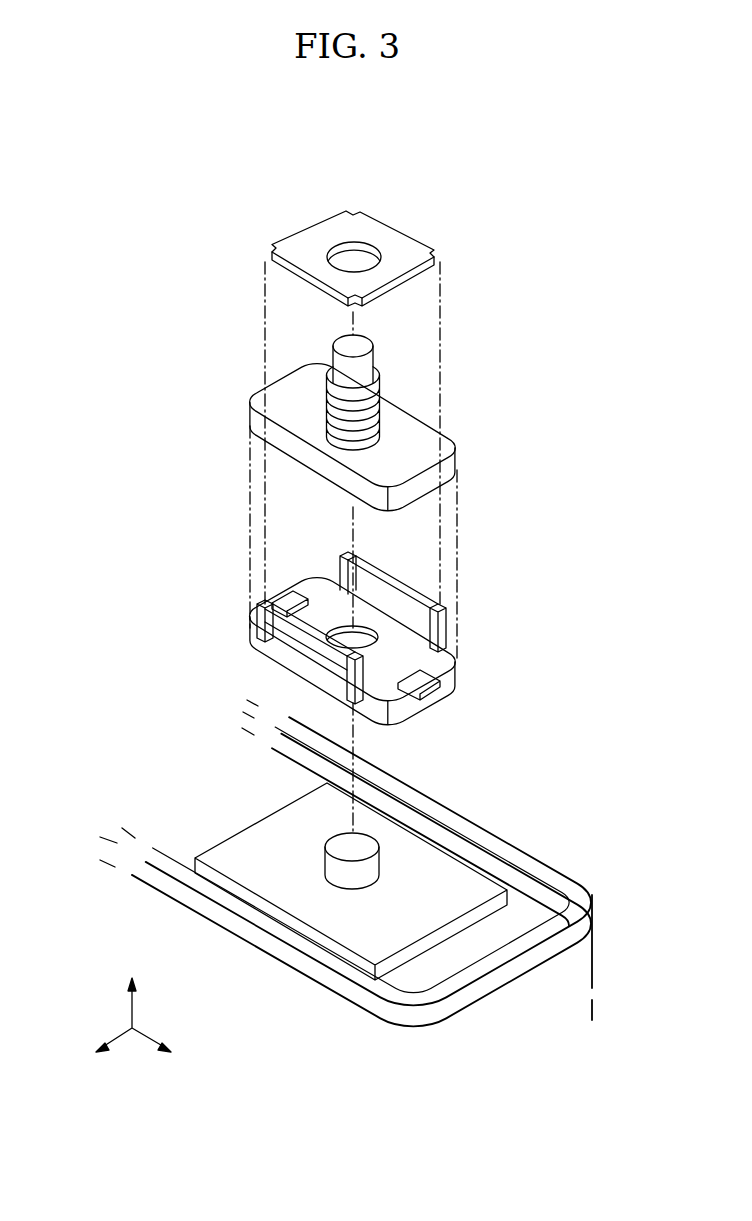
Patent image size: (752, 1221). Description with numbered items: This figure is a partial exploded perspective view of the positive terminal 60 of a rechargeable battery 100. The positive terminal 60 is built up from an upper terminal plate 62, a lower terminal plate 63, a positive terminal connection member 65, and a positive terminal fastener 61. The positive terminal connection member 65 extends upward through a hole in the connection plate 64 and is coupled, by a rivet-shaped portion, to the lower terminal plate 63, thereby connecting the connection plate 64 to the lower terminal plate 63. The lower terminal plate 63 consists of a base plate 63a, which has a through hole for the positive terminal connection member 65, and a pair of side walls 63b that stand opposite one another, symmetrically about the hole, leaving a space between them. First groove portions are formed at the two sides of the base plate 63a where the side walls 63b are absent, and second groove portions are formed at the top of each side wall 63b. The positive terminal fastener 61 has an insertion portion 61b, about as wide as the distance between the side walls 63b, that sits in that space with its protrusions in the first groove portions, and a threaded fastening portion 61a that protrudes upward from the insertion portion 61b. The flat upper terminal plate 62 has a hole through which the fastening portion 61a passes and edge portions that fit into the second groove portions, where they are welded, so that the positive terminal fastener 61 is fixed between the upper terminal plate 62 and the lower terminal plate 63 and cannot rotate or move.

The rechargeable battery 100 is at (373, 115).
The positive terminal 60 is at (230, 228).
The positive terminal fastener 61 is at (542, 362).
The fastening portion 61a is at (375, 390).
The insertion portion 61b is at (452, 442).
The upper terminal plate 62 is at (440, 253).
The lower terminal plate 63 is at (552, 602).
The base plate 63a is at (454, 677).
The side walls 63b is at (446, 620).
The connection plate 64 is at (475, 880).
The positive terminal connection member 65 is at (340, 868).